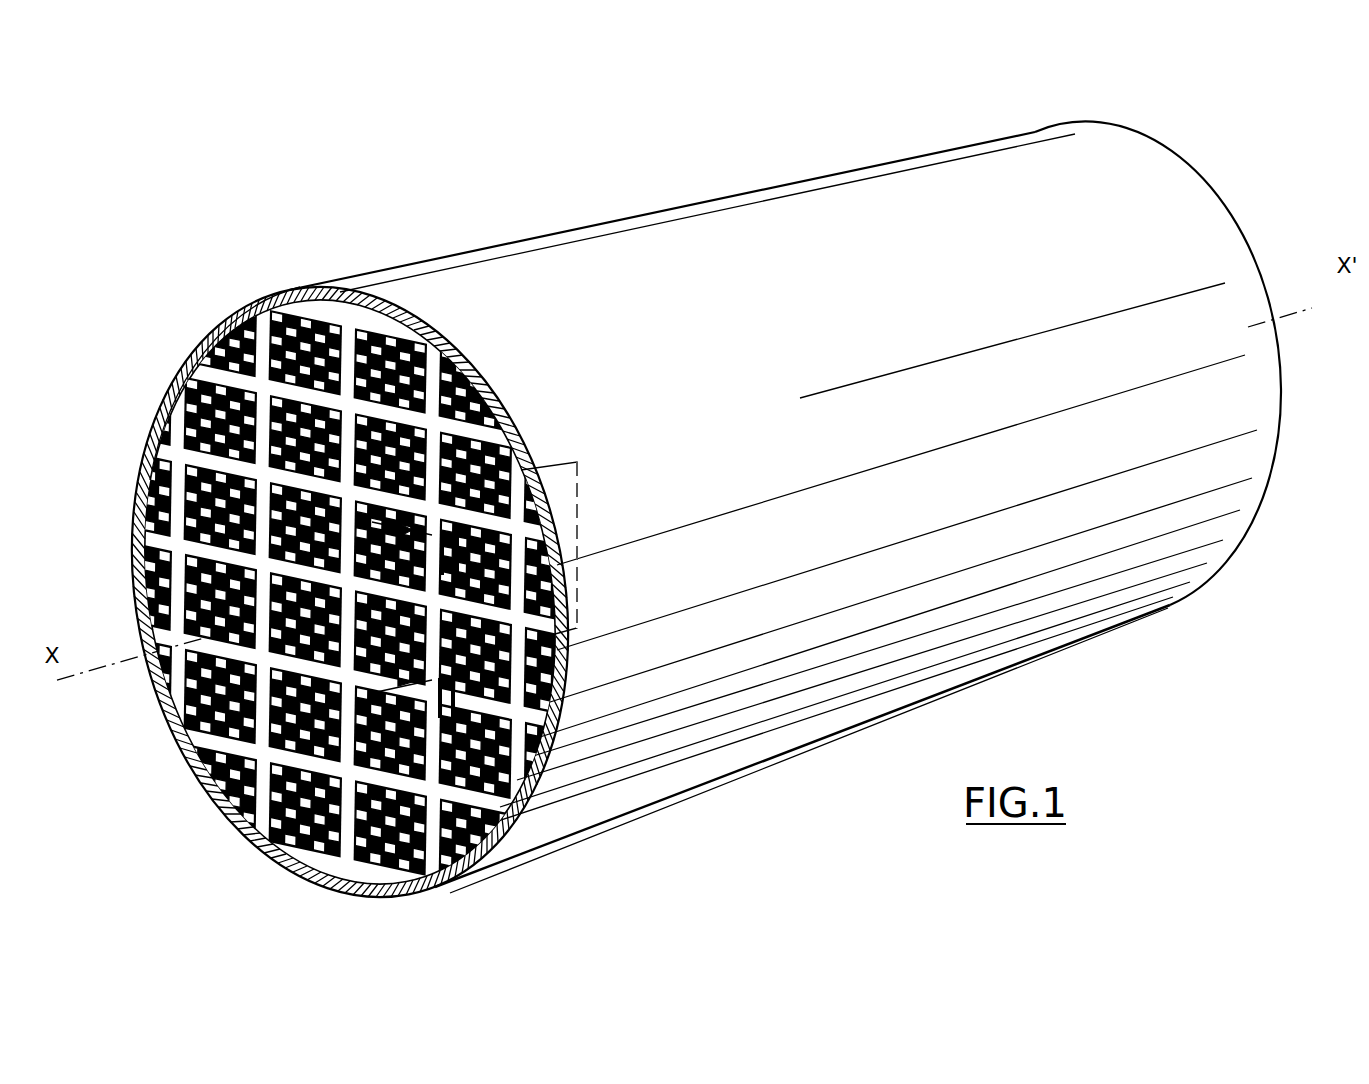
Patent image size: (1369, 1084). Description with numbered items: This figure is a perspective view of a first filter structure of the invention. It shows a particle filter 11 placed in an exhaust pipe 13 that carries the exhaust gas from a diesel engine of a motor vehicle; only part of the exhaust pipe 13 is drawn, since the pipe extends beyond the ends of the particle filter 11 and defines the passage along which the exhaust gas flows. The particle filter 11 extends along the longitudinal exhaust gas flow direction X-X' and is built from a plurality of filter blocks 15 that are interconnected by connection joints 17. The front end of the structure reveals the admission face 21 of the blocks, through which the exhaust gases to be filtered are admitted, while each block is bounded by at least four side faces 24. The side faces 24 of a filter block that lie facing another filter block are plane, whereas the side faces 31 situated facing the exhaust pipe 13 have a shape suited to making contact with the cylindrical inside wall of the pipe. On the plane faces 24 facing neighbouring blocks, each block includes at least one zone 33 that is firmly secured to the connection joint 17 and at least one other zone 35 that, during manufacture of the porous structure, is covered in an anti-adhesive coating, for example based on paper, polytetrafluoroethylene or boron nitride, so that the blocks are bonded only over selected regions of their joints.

The particle filter 11 is at (455, 209).
The exhaust pipe 13 is at (608, 255).
The filter blocks 15 is at (187, 384).
The connection joints 17 is at (521, 462).
The admission face 21 is at (290, 308).
The side faces 24 is at (430, 393).
The side faces facing the exhaust pipe 31 is at (403, 332).
The zone firmly secured to the joint 33 is at (265, 420).
The zone covered in an anti-adhesive coating 35 is at (187, 585).